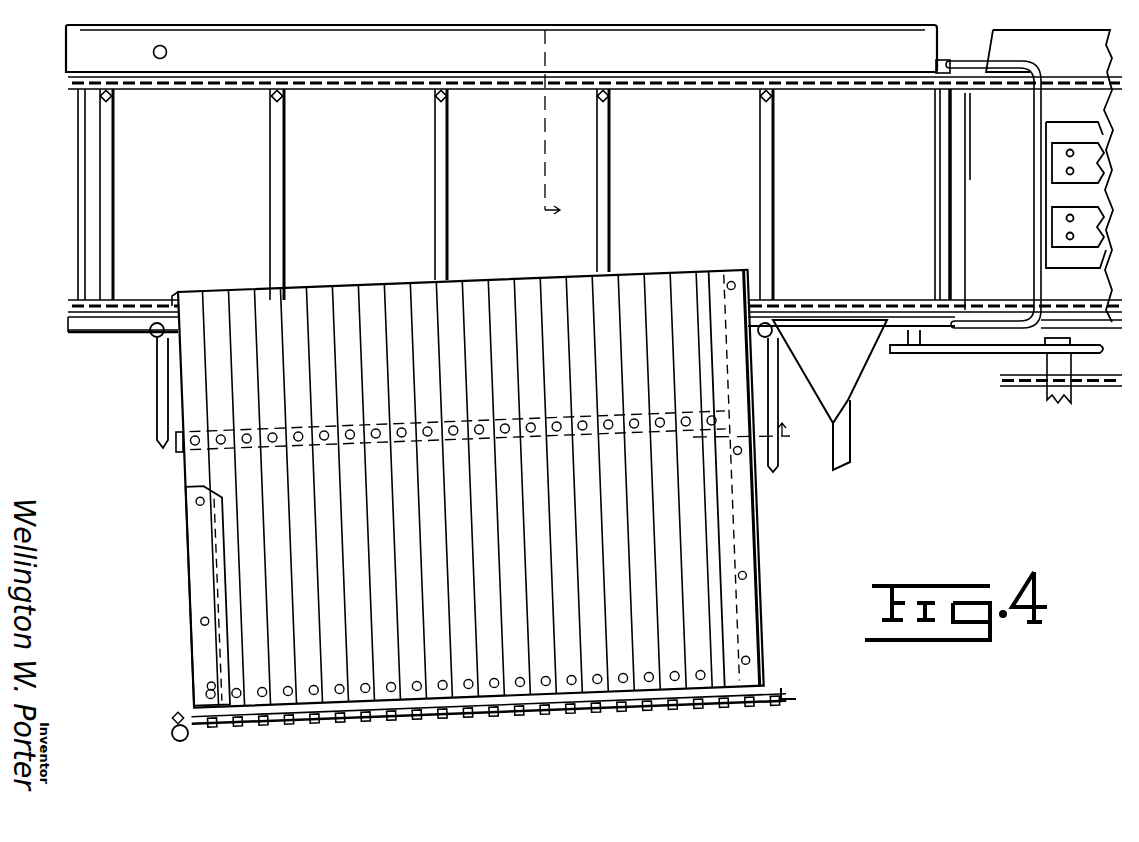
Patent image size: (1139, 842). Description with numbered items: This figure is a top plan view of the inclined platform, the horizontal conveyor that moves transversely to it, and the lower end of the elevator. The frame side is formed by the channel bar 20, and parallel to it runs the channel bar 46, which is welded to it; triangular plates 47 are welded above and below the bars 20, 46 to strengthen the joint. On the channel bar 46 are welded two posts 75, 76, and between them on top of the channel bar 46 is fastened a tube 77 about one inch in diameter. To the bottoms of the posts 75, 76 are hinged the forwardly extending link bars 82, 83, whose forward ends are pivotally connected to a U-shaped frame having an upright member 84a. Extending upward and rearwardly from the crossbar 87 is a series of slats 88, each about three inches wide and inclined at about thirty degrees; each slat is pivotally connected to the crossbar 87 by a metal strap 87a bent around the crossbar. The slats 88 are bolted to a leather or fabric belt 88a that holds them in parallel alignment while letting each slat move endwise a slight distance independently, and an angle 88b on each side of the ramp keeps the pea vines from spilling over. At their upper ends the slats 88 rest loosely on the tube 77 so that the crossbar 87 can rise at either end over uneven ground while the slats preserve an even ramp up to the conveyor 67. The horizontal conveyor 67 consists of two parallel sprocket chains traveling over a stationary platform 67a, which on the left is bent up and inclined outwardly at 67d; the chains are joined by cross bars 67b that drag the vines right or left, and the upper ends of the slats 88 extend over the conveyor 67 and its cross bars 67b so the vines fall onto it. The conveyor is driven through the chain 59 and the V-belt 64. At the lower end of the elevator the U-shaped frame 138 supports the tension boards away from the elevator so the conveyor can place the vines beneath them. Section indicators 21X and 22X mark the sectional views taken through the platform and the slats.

The channel bar 20 is at (843, 445).
The section line 21X is at (547, 123).
The section line 22X is at (735, 439).
The channel bar 46 is at (108, 326).
The triangular plates 47 is at (861, 352).
The chain 59 is at (1097, 388).
The V-belt 64 is at (961, 354).
The horizontal conveyor 67 is at (728, 90).
The stationary platform 67a is at (148, 163).
The cross bars 67b is at (610, 172).
The upwardly bent inclined part of platform 67d is at (88, 41).
The post 75 is at (152, 337).
The post 76 is at (775, 330).
The tube 77 is at (180, 290).
The forwardly extending bar 82 is at (160, 396).
The forwardly extending bar 83 is at (779, 468).
The upright member 84a is at (174, 740).
The crossbar 87 is at (565, 710).
The metal strap 87a is at (789, 704).
The slats 88 is at (262, 547).
The leather or fabric belt 88a is at (177, 448).
The angle 88b is at (192, 511).
The U-shaped frame 138 is at (1030, 108).